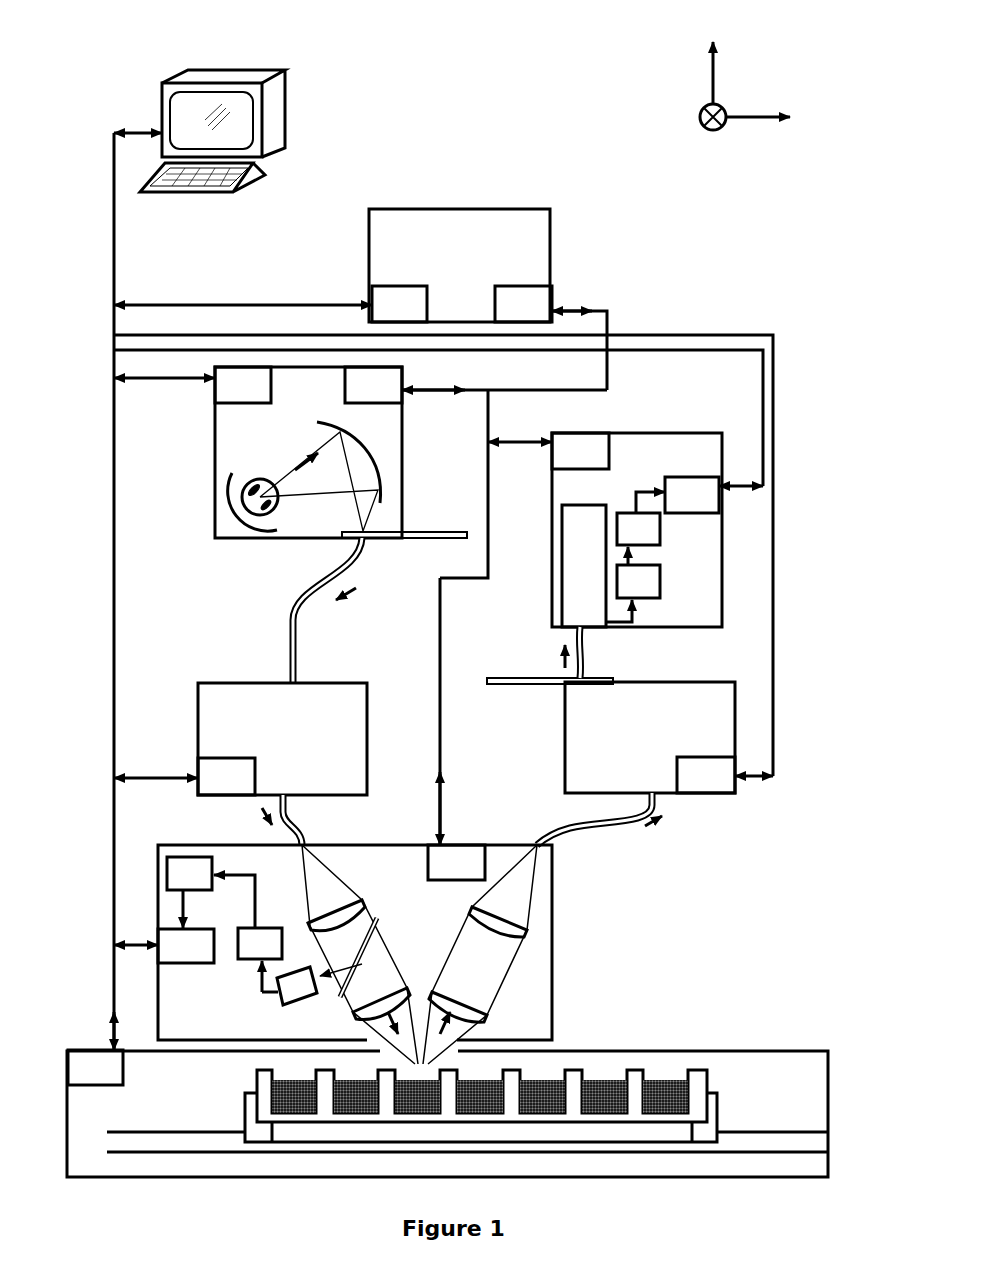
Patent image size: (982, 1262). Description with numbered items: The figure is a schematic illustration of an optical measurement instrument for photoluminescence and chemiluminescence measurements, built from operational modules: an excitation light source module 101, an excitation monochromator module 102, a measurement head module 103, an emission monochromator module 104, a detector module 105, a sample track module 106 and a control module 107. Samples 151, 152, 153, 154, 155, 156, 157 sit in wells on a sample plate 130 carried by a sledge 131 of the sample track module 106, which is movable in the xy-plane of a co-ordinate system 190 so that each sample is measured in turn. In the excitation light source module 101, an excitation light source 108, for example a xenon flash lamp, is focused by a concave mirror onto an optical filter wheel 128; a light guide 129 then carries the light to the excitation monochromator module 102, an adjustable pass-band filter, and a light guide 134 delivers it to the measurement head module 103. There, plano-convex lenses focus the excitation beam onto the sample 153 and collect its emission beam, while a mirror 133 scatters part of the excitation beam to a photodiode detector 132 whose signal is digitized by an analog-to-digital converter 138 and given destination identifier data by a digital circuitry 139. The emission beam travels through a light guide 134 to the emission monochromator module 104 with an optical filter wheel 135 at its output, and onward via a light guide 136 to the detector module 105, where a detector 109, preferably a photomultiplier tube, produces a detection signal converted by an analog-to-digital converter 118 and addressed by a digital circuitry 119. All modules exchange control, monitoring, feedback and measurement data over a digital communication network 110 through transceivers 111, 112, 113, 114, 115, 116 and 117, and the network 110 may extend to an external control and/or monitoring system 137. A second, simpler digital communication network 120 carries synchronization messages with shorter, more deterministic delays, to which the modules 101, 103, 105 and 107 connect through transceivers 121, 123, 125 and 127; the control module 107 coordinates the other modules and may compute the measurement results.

The excitation light source module 101 is at (215, 478).
The excitation monochromator module 102 is at (282, 739).
The measurement head module 103 is at (552, 950).
The emission monochromator module 104 is at (650, 737).
The detector module 105 is at (700, 433).
The sample track module 106 is at (680, 1051).
The control module 107 is at (420, 209).
The excitation light source 108 is at (262, 478).
The detector 109 is at (573, 505).
The digital communication network 110 is at (114, 268).
The transceiver 111 is at (272, 388).
The transceiver 112 is at (255, 778).
The transceiver 113 is at (170, 963).
The transceiver 114 is at (677, 776).
The transceiver 115 is at (680, 477).
The transceiver 116 is at (80, 1085).
The transceiver 117 is at (427, 300).
The analog-to-digital converter 118 is at (648, 598).
The digital circuitry 119 is at (648, 545).
The digital communication network 120 is at (438, 648).
The transceiver 121 is at (404, 382).
The transceiver 123 is at (496, 830).
The transceiver 125 is at (592, 433).
The transceiver 127 is at (552, 292).
The optical filter wheel 128 is at (443, 530).
The light guide 129 is at (288, 654).
The sample plate 130 is at (257, 1080).
The sledge 131 is at (245, 1120).
The photodiode detector 132 is at (300, 1005).
The mirror 133 is at (384, 920).
The light guide 134 is at (305, 832).
The optical filter wheel 135 is at (500, 675).
The light guide 136 is at (583, 660).
The external control and/or monitoring system 137 is at (280, 113).
The analog-to-digital converter 138 is at (265, 928).
The digital circuitry 139 is at (193, 890).
The sample 151 is at (294, 1096).
The sample 152 is at (356, 1096).
The sample 153 is at (417, 1096).
The sample 154 is at (480, 1096).
The sample 155 is at (542, 1096).
The sample 156 is at (604, 1096).
The sample 157 is at (665, 1096).
The co-ordinate system 190 is at (740, 64).